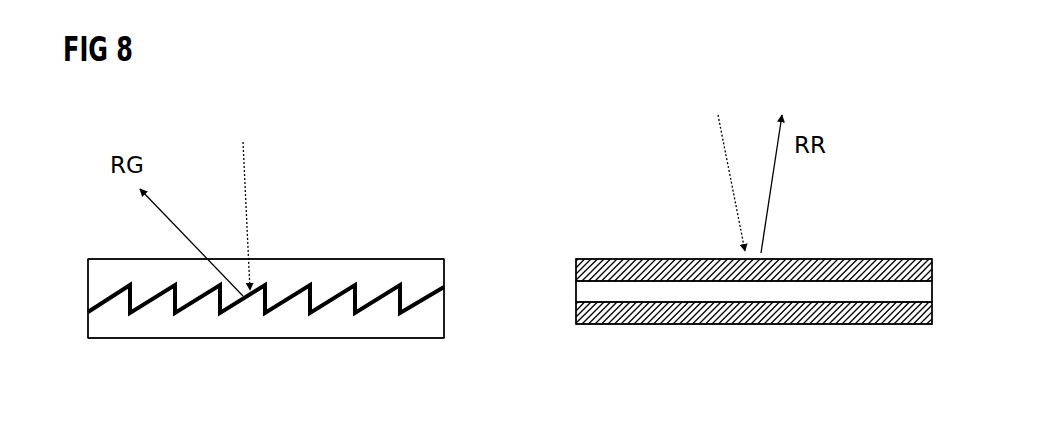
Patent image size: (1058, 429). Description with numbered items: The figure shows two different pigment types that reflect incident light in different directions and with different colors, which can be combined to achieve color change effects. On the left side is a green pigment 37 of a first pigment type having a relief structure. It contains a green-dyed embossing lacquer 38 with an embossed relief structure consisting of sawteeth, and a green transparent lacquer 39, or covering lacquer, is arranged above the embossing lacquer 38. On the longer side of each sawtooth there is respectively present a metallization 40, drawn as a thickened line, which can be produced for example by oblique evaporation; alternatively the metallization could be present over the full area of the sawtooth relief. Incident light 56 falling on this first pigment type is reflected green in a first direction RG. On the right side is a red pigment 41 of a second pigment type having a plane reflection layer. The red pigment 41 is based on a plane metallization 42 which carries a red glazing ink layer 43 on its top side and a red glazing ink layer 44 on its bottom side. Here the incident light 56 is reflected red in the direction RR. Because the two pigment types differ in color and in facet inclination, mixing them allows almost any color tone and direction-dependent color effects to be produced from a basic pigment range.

The green pigment 37 is at (403, 207).
The green-dyed embossing lacquer 38 is at (433, 318).
The green transparent lacquer 39 is at (324, 267).
The metallization 40 is at (109, 294).
The incident light 56 is at (243, 157).
The red pigment 41 is at (864, 195).
The plane metallization 42 is at (592, 291).
The red glazing ink layer 43 is at (613, 258).
The red glazing ink layer 44 is at (612, 325).